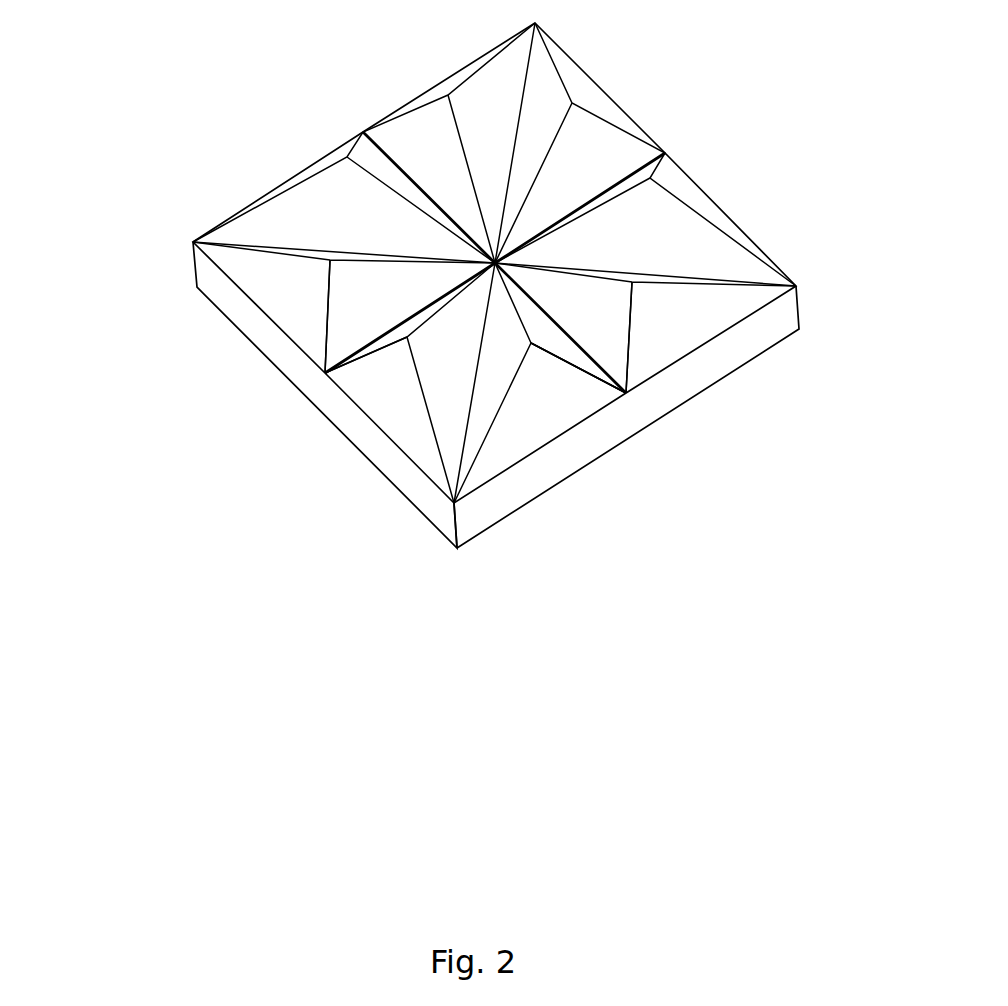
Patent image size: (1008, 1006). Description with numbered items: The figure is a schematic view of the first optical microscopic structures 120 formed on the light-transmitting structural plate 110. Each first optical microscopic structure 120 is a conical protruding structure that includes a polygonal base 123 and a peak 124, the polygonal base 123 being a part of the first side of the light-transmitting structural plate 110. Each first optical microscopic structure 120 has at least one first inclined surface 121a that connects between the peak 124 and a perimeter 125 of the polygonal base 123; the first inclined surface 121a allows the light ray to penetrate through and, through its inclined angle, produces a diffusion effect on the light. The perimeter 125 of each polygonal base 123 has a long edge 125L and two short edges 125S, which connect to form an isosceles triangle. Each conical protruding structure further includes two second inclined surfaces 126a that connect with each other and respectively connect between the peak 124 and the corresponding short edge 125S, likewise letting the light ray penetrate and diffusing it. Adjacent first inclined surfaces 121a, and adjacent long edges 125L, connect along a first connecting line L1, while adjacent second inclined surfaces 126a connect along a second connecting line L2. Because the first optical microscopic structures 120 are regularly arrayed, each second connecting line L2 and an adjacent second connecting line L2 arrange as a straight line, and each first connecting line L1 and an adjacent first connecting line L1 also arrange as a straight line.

The light-transmitting structural plate 110 is at (207, 268).
The first optical microscopic structure 120 is at (418, 440).
The first inclined surface 121a is at (447, 399).
The polygonal base 123 is at (483, 487).
The peak 124 is at (533, 342).
The perimeter 125 is at (117, 304).
The short edge 125S is at (485, 326).
The long edge 125L is at (530, 293).
The second inclined surface 126a is at (556, 388).
The first connecting line L1 is at (527, 70).
The second connecting line L2 is at (397, 167).